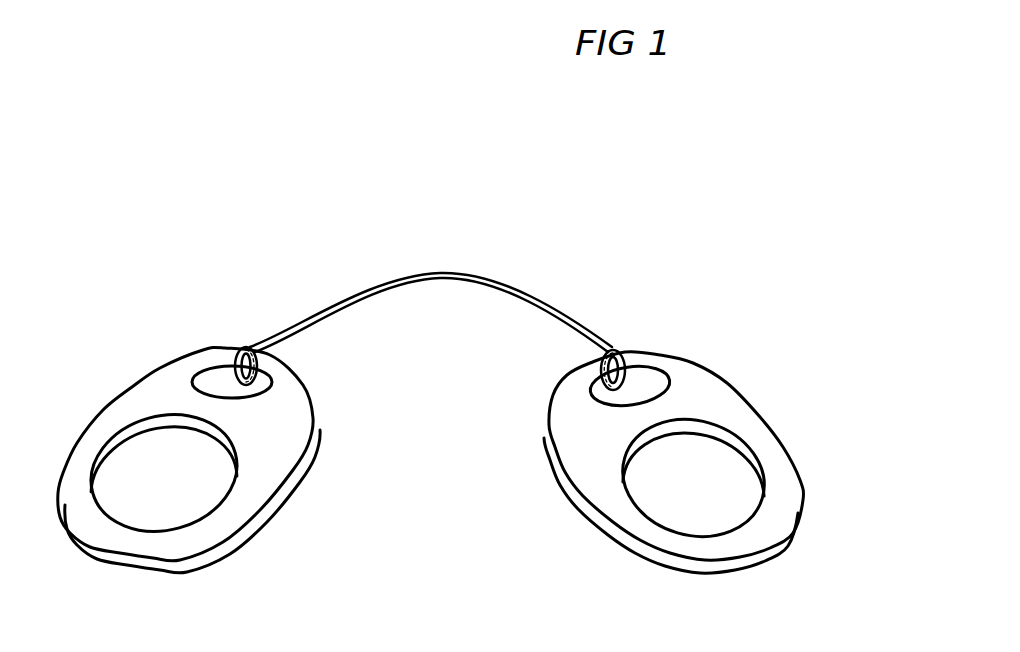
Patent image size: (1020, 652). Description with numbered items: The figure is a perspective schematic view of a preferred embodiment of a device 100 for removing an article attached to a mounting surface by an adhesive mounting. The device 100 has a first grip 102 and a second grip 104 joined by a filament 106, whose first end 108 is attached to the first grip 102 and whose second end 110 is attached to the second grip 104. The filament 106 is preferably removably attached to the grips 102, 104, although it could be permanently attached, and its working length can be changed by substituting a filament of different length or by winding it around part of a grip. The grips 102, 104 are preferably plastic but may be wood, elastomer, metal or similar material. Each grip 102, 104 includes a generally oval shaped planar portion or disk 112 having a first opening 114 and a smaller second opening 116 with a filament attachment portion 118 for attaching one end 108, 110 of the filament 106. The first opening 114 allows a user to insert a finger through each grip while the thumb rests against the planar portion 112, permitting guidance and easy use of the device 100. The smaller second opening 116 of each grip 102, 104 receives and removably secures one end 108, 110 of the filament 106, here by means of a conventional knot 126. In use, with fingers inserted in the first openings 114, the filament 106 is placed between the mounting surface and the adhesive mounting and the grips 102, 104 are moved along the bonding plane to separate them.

The device for removing an article from a mounting surface 100 is at (607, 198).
The first grip 102 is at (294, 505).
The second grip 104 is at (567, 530).
The filament 106 is at (423, 273).
The first end 108 is at (288, 350).
The second end 110 is at (597, 333).
The planar portion 112 is at (115, 412).
The first opening 114 is at (173, 512).
The second opening 116 is at (216, 380).
The filament attachment portion 118 is at (292, 392).
The knot 126 is at (248, 345).